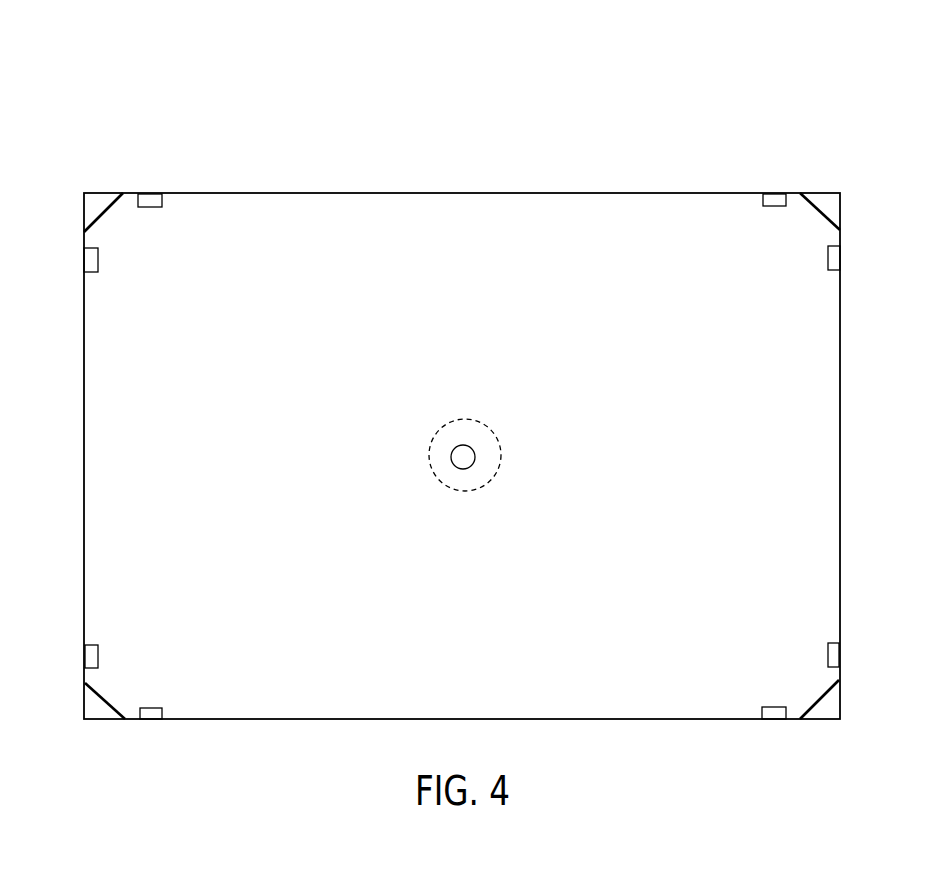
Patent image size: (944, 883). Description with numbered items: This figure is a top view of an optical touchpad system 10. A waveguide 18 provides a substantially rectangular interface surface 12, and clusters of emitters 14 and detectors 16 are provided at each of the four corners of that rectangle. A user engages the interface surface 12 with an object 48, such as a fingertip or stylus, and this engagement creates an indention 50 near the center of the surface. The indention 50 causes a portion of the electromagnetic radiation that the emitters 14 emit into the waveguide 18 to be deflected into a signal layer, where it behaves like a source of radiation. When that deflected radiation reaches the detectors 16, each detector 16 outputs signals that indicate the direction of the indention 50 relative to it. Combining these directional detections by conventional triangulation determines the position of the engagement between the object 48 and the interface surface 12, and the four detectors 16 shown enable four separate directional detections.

The optical touchpad system 10 is at (585, 76).
The interface surface 12 is at (578, 313).
The emitters 14 is at (150, 195).
The detectors 16 is at (103, 212).
The waveguide 18 is at (310, 193).
The object 48 is at (466, 447).
The indention 50 is at (500, 466).